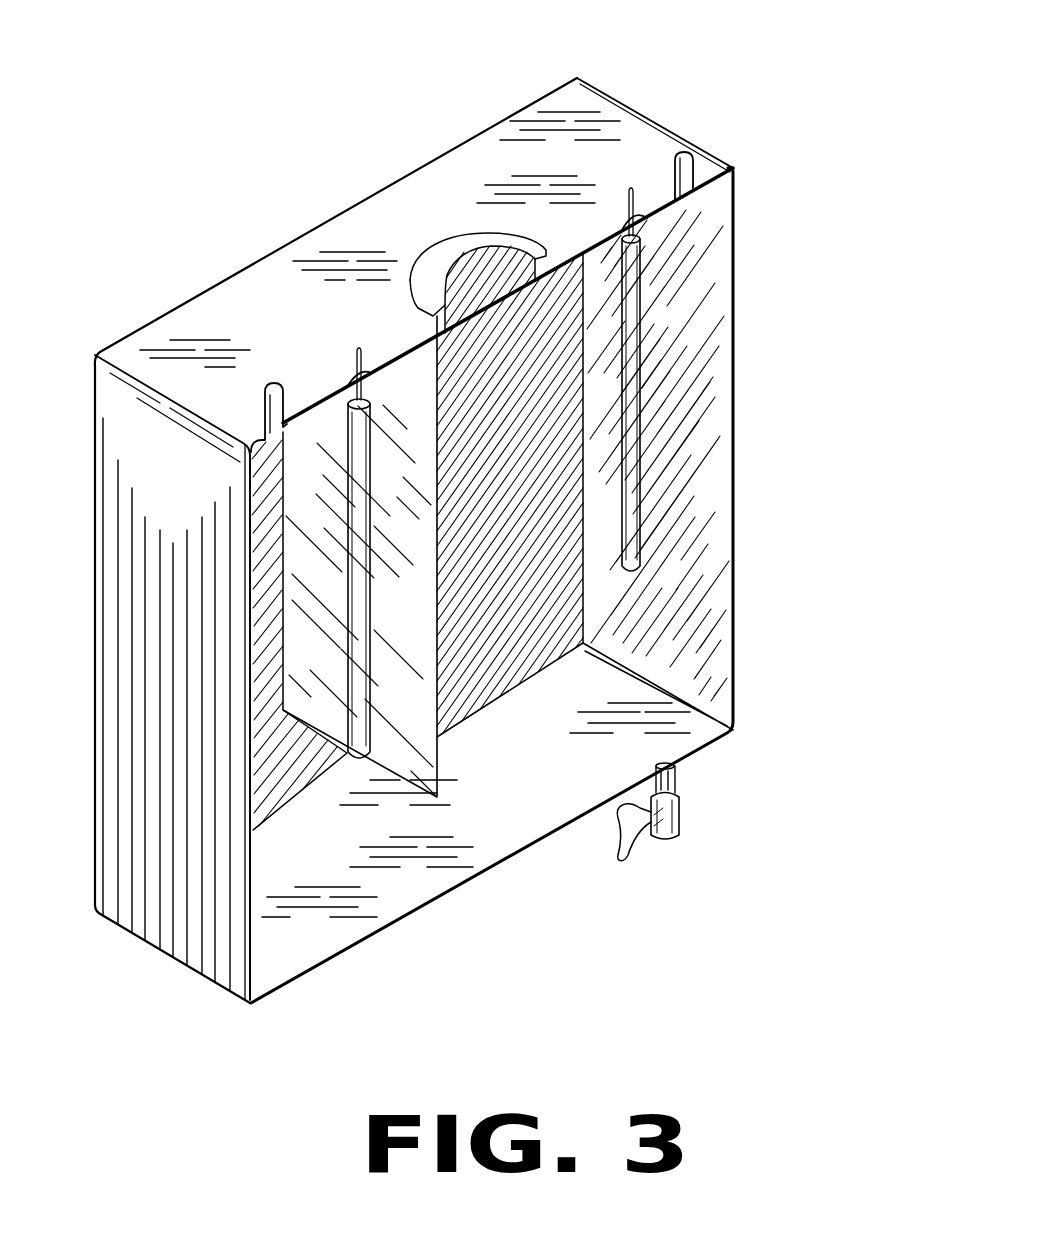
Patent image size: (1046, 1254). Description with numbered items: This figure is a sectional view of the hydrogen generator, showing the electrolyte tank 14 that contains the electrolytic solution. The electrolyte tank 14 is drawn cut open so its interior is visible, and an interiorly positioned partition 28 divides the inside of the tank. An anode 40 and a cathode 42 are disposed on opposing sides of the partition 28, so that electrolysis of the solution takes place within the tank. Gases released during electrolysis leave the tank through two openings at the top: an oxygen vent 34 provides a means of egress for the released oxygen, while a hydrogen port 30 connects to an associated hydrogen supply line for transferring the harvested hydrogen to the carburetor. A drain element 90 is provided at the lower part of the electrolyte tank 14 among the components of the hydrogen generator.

The electrolyte tank 14 is at (472, 135).
The partition wall 28 is at (437, 750).
The hydrogen port 30 is at (686, 148).
The oxygen vent 34 is at (268, 388).
The anode 40 is at (347, 757).
The cathode 42 is at (645, 397).
The drain element 90 is at (679, 833).